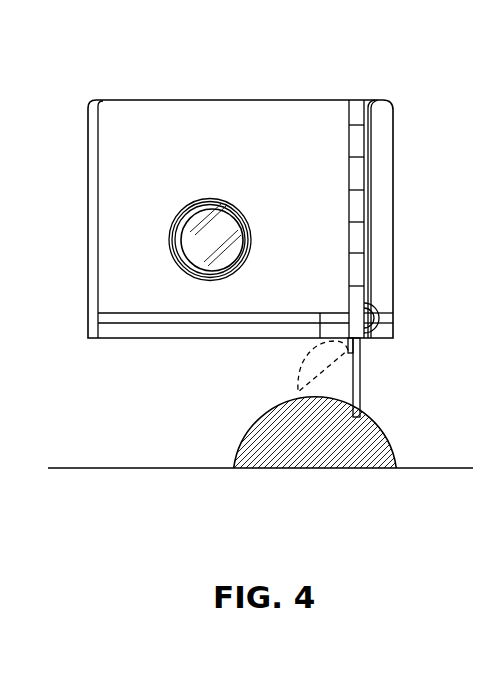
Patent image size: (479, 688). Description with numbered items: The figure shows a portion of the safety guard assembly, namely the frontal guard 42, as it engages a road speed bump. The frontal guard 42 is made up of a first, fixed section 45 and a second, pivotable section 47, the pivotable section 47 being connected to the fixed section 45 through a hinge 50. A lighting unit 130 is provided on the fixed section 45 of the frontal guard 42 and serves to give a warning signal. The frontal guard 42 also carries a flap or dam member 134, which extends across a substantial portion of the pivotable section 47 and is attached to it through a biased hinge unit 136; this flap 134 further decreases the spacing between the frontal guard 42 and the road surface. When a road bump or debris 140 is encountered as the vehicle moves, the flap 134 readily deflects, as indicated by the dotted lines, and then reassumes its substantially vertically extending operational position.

The fixed section 45 is at (193, 122).
The frontal guard 42 is at (359, 97).
The pivotable section 47 is at (382, 173).
The hinge 50 is at (358, 238).
The lighting unit 130 is at (200, 250).
The flap or dam member 134 is at (362, 373).
The biased hinge unit 136 is at (297, 391).
The road bump or debris 140 is at (378, 446).